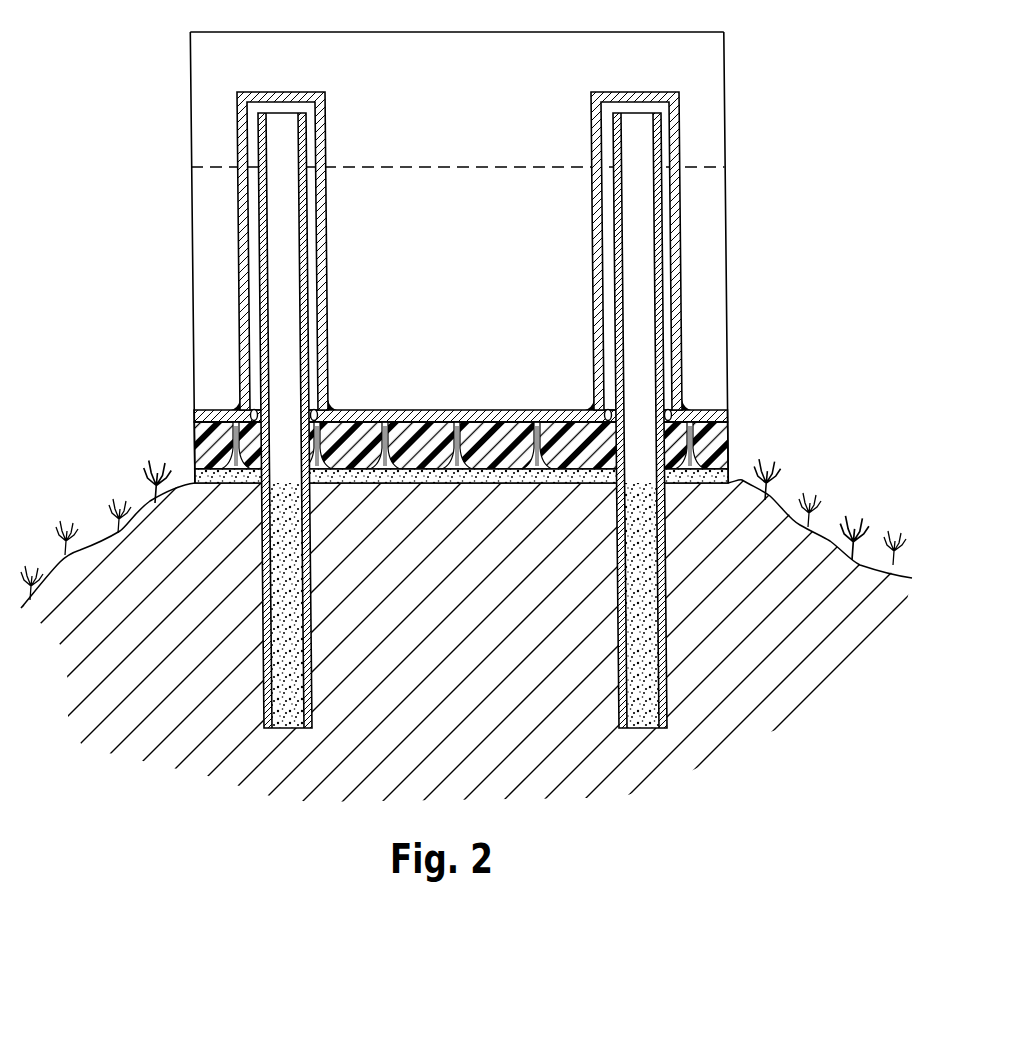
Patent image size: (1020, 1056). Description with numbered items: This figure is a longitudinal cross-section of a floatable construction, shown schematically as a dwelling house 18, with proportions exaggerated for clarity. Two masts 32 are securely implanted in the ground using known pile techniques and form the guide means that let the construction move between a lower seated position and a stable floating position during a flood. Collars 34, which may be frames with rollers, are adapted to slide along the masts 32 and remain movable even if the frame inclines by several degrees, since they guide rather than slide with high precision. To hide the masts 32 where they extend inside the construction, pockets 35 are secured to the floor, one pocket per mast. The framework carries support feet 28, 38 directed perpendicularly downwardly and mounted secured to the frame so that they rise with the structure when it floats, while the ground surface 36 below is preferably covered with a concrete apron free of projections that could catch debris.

The dwelling house 18 is at (726, 100).
The pockets 35 is at (682, 244).
The masts 32 is at (662, 345).
The collars 34 is at (602, 410).
The ground surface 36 is at (705, 490).
The support feet 28 is at (462, 485).
The support feet 38 is at (541, 485).